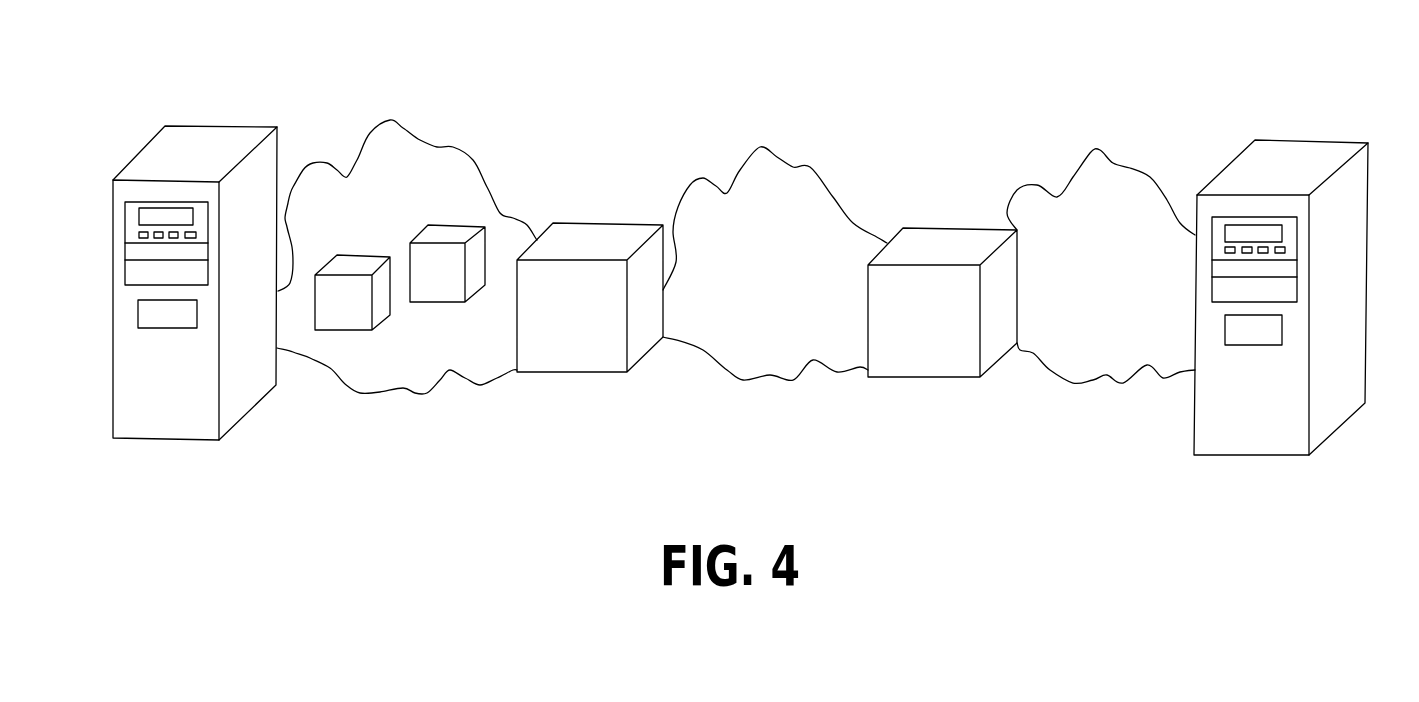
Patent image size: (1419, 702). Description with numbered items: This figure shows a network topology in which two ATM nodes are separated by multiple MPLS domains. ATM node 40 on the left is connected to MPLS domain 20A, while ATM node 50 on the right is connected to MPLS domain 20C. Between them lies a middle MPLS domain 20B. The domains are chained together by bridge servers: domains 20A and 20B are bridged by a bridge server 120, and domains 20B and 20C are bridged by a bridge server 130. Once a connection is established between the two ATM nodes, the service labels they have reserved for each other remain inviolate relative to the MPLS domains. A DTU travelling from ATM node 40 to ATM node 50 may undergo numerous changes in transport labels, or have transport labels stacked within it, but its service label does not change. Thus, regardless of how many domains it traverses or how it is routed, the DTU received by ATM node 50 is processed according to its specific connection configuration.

The ATM node 40 is at (198, 140).
The MPLS domain 20A is at (420, 140).
The MPLS domain 20B is at (763, 147).
The MPLS domain 20C is at (1098, 148).
The bridge server 120 is at (582, 233).
The bridge server 130 is at (912, 237).
The ATM node 50 is at (1267, 155).